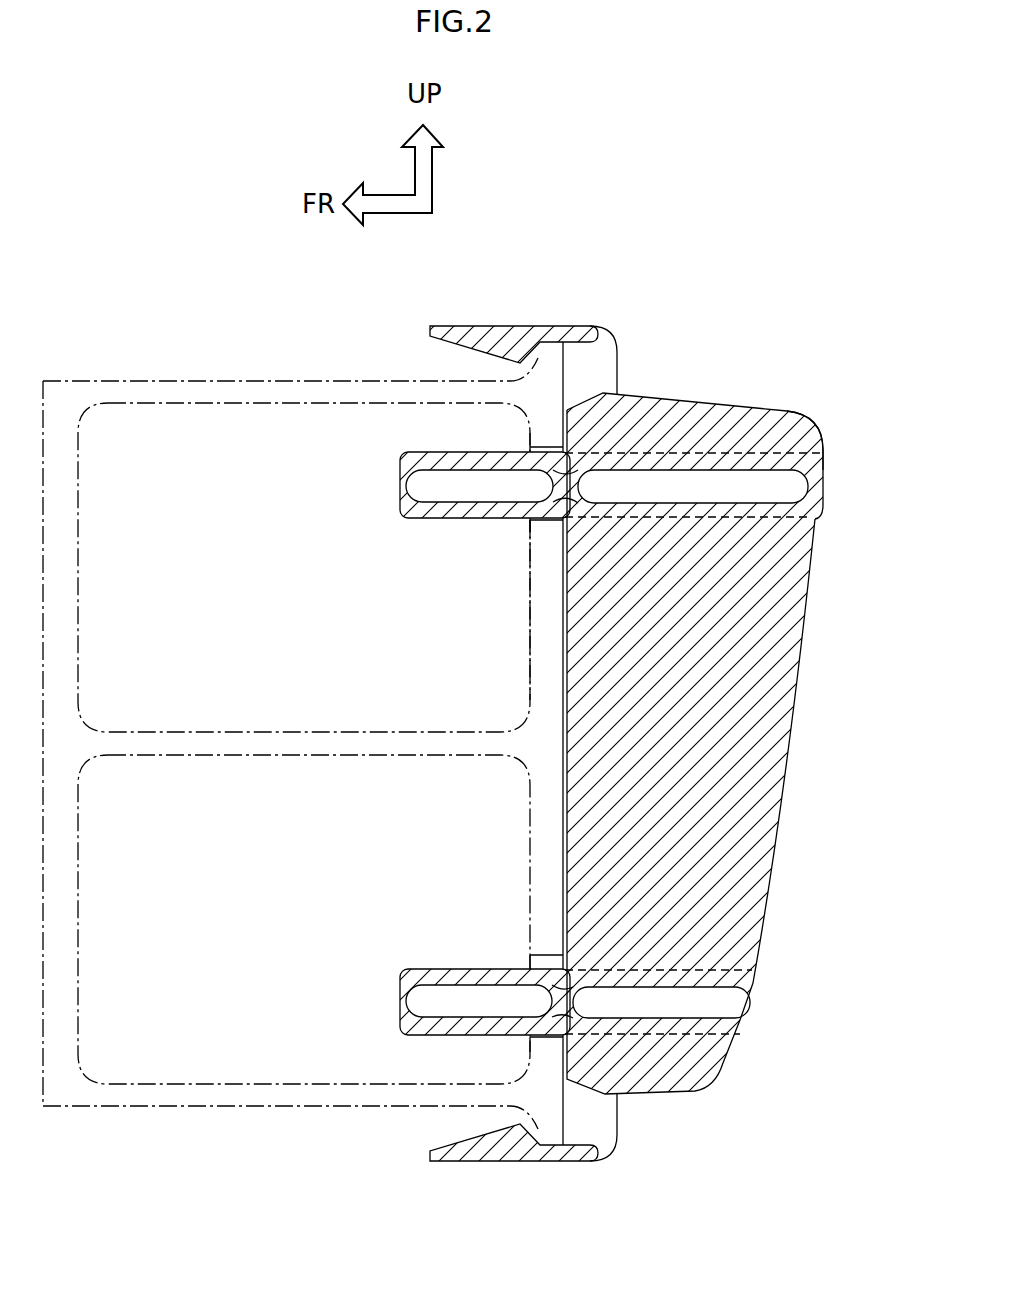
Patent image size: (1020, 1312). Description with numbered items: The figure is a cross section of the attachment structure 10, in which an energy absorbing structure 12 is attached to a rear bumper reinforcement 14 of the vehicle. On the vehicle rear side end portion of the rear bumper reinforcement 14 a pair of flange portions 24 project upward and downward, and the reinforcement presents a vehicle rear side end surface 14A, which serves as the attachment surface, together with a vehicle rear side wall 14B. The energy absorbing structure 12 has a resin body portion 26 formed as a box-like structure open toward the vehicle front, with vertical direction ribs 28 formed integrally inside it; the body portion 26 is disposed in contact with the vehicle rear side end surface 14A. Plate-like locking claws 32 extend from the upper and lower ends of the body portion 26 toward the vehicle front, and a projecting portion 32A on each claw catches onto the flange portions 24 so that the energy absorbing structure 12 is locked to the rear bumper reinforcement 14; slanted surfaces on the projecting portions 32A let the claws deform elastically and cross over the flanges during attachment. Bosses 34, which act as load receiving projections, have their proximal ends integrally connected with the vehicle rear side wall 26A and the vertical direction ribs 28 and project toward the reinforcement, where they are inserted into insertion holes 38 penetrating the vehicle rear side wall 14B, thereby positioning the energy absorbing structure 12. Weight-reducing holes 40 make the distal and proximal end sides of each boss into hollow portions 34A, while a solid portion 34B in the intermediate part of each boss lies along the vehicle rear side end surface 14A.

The attachment structure 10 is at (617, 226).
The energy absorbing structure 12 is at (615, 737).
The rear bumper reinforcement 14 is at (173, 380).
The vehicle rear side end surface 14A is at (566, 806).
The vehicle rear side wall 14B is at (528, 590).
The flange portions 24 is at (540, 355).
The body portion 26 is at (810, 410).
The vehicle rear side wall 26A is at (788, 810).
The vertical direction ribs 28 is at (745, 690).
The locking claws 32 is at (469, 737).
The projecting portion 32A is at (482, 352).
The bosses 34 is at (627, 737).
The hollow portions 34A is at (432, 520).
The solid portion 34B is at (530, 523).
The insertion holes 38 is at (525, 478).
The weight-reducing holes 40 is at (402, 470).